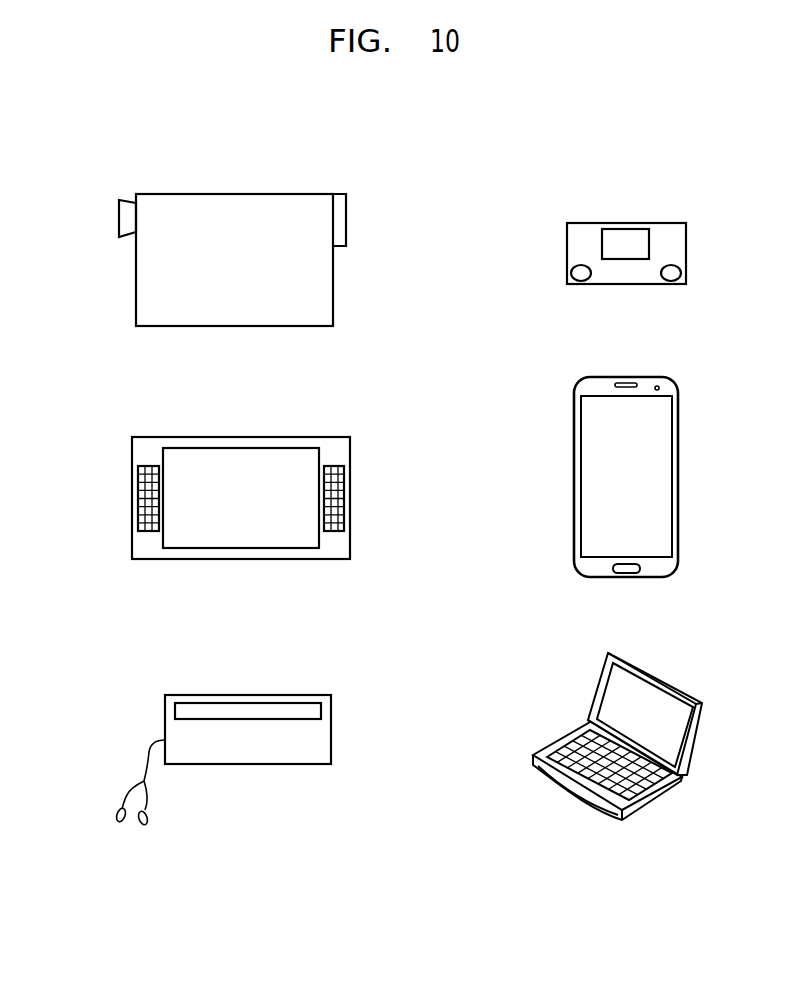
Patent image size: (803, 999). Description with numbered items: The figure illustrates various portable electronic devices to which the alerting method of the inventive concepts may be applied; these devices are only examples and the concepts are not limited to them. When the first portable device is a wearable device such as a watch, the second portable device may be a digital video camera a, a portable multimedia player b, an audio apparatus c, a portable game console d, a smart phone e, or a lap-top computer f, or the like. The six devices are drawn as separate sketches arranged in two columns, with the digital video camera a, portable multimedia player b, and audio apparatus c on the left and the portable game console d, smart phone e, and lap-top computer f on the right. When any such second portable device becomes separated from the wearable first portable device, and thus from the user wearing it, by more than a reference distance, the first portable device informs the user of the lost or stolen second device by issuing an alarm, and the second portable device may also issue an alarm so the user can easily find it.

The digital video camera a is at (197, 260).
The portable multimedia player (PMP) b is at (199, 498).
The audio apparatus c is at (189, 760).
The portable game console d is at (568, 253).
The smart phone e is at (564, 477).
The lap-top computer f is at (576, 736).